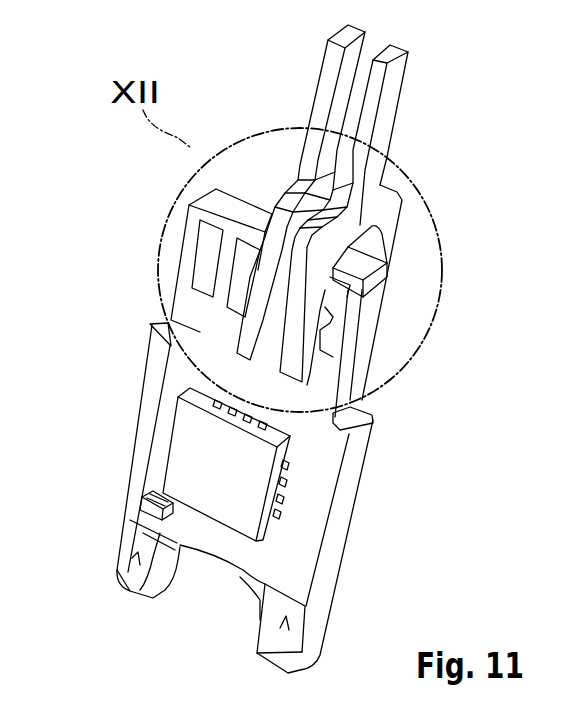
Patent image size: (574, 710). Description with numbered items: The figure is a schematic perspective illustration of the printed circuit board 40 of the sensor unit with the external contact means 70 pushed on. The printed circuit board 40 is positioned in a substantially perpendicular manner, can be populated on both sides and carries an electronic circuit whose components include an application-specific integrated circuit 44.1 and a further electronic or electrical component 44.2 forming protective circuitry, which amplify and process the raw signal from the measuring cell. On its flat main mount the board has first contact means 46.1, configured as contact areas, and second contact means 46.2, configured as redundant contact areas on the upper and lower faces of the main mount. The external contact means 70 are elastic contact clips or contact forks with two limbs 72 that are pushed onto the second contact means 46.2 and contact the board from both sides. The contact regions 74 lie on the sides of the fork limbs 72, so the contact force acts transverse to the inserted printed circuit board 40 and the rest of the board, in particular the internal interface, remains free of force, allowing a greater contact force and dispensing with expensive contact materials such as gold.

The printed circuit board 40 is at (138, 306).
The application-specific integrated circuit 44.1 is at (193, 437).
The electronic and/or electrical component 44.2 is at (137, 513).
The first contact means 46.1 is at (288, 618).
The second contact means 46.2 is at (333, 290).
The external contact means 70 is at (418, 95).
The limbs 72 is at (322, 343).
The contact regions 74 is at (327, 317).